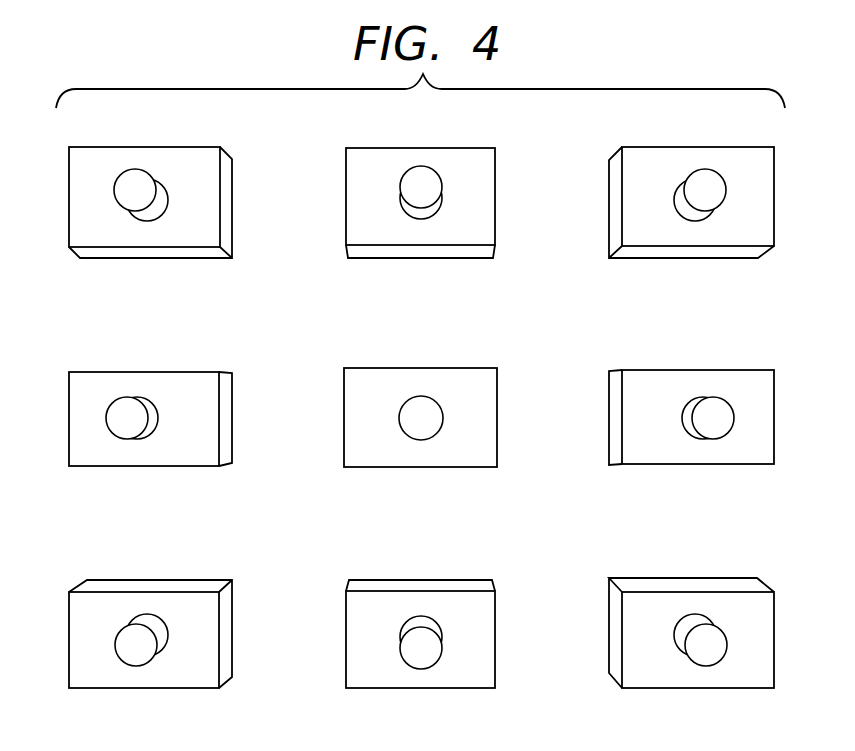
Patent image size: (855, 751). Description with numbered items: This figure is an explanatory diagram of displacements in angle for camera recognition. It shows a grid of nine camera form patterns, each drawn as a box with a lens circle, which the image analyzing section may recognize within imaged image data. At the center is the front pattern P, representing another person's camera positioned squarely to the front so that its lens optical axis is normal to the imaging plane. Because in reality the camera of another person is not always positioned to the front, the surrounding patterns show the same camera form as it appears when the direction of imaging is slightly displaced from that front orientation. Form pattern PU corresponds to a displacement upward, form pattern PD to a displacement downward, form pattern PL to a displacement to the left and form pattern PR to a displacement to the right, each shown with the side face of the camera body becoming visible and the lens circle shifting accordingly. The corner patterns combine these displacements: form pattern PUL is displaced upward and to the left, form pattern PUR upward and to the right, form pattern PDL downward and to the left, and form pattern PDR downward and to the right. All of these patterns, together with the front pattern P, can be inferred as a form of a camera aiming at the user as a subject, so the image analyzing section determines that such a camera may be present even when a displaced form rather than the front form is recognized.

The form pattern PUL is at (126, 202).
The form pattern PU is at (396, 203).
The form pattern PUR is at (664, 202).
The form pattern PL is at (132, 419).
The front pattern P is at (404, 417).
The form pattern PR is at (669, 417).
The form pattern PDL is at (127, 634).
The form pattern PD is at (397, 634).
The form pattern PDR is at (665, 633).